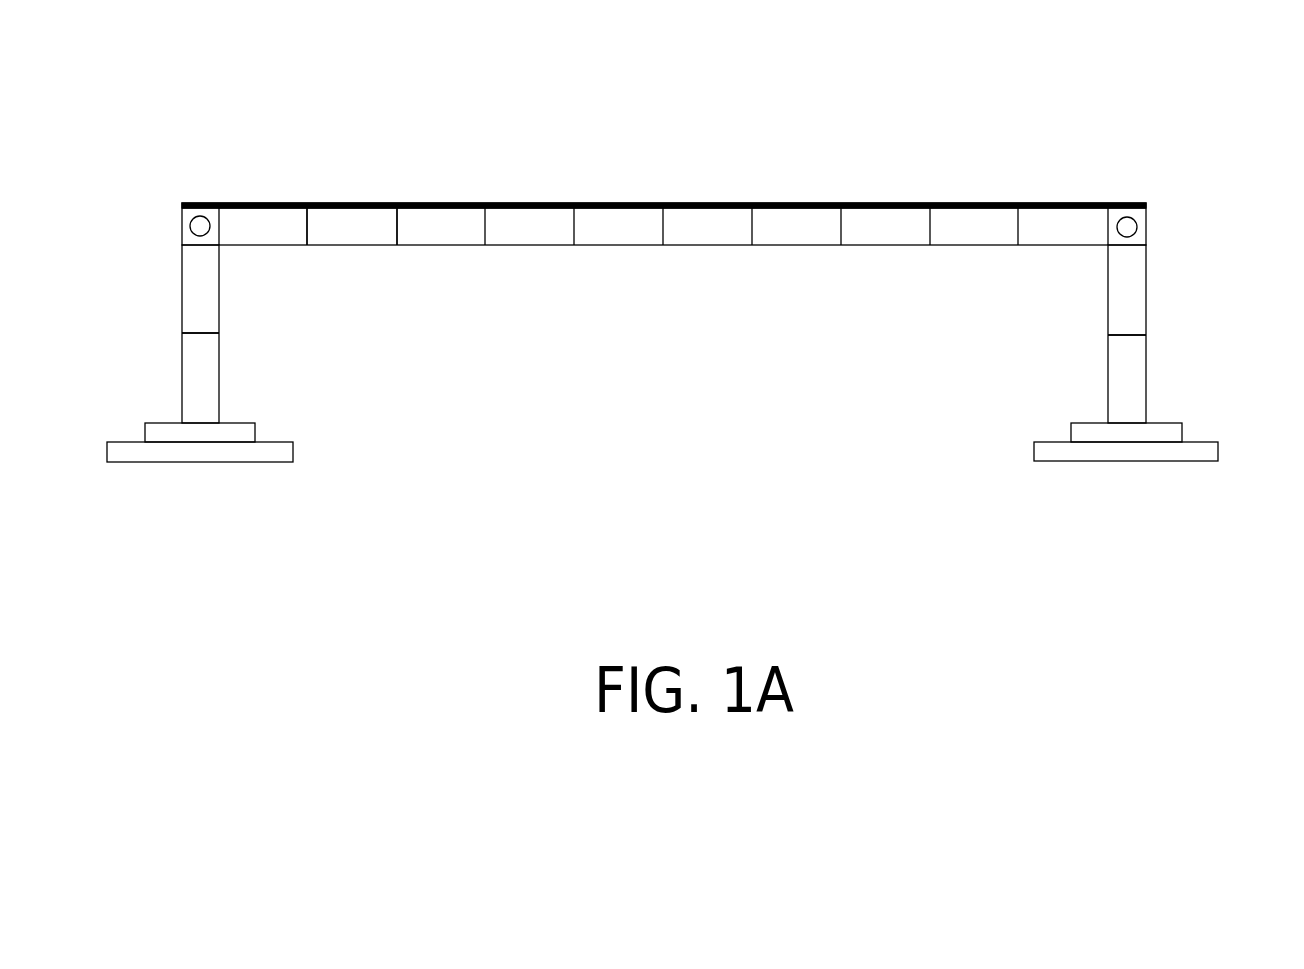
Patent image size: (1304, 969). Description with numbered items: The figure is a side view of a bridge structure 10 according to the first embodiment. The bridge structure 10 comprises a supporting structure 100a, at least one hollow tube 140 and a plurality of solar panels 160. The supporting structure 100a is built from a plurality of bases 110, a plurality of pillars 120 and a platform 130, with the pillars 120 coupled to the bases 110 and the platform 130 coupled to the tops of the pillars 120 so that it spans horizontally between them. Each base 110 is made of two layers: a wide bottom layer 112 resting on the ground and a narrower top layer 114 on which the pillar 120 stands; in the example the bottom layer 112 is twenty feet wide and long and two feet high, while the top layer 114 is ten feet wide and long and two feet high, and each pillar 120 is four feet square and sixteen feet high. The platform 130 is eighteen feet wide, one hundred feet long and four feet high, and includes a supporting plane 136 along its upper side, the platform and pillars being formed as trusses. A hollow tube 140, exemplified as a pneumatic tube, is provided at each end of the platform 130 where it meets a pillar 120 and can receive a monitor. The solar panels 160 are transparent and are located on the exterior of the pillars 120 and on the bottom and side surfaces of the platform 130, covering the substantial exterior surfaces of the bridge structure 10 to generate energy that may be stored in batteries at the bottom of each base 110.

The bridge structure 10 is at (1302, 640).
The supporting structure 100a is at (1205, 170).
The base 110 is at (270, 546).
The bottom layer 112 is at (177, 453).
The top layer 114 is at (222, 438).
The pillar 120 is at (181, 290).
The platform 130 is at (483, 178).
The supporting plane 136 is at (801, 203).
The hollow tube 140 is at (196, 225).
The solar panel 160 is at (425, 233).